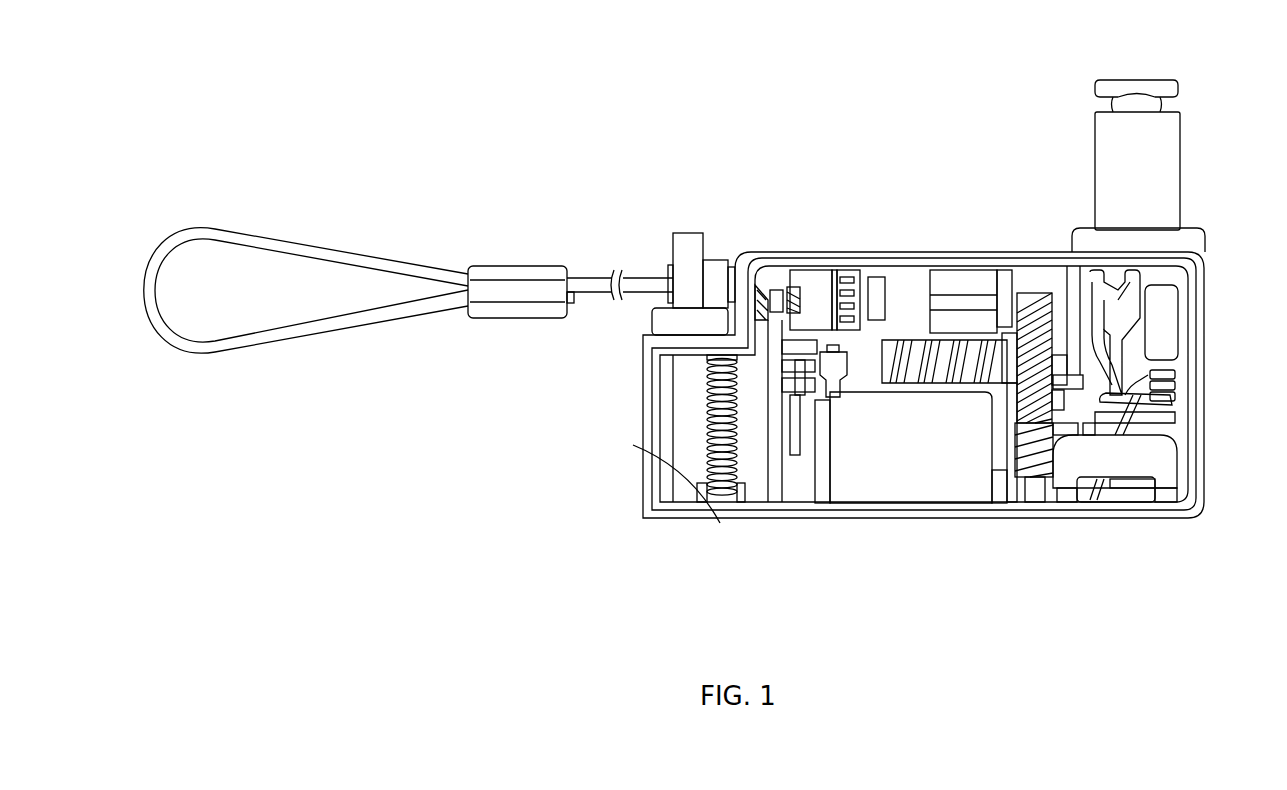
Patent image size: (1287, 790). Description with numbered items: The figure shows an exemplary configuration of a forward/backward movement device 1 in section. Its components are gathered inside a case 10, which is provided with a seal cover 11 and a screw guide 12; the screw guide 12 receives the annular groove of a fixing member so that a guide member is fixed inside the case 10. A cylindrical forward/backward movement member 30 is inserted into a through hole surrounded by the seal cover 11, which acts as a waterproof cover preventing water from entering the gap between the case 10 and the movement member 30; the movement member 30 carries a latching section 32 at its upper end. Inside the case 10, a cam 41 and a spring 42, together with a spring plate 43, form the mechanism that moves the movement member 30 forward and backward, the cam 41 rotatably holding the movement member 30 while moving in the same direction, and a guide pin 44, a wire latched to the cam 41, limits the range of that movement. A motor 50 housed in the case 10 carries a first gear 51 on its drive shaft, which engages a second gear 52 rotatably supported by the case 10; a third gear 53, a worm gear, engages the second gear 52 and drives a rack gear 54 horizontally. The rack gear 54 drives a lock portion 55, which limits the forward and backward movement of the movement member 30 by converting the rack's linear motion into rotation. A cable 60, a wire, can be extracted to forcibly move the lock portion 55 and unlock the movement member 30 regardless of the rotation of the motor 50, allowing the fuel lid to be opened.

The forward/backward movement device 1 is at (779, 61).
The case 10 is at (793, 264).
The seal cover 11 is at (1183, 242).
The screw guide 12 is at (1135, 498).
The forward/backward movement member 30 is at (1165, 170).
The latching section 32 is at (1166, 88).
The cam 41 is at (1165, 340).
The spring 42 is at (1140, 416).
The spring plate 43 is at (1145, 462).
The guide pin 44 is at (1140, 385).
The motor 50 is at (895, 463).
The first gear 51 is at (1020, 466).
The second gear 52 is at (1037, 293).
The third gear 53 is at (917, 333).
The rack gear 54 is at (968, 278).
The lock portion 55 is at (1105, 312).
The cable 60 is at (340, 262).